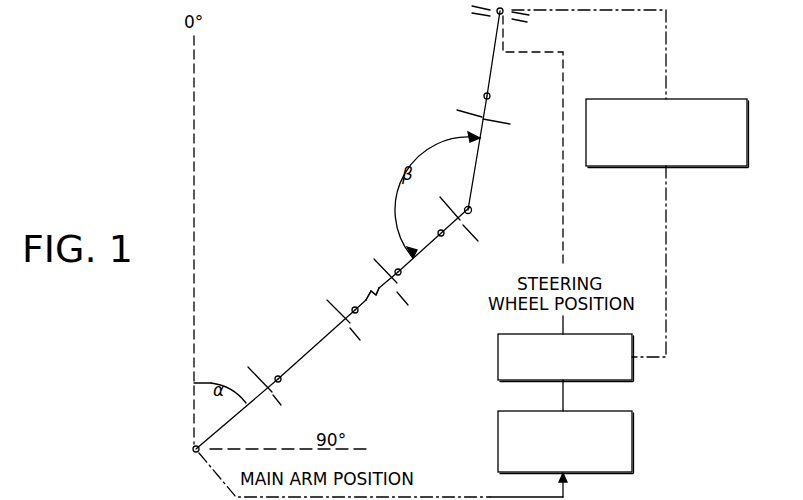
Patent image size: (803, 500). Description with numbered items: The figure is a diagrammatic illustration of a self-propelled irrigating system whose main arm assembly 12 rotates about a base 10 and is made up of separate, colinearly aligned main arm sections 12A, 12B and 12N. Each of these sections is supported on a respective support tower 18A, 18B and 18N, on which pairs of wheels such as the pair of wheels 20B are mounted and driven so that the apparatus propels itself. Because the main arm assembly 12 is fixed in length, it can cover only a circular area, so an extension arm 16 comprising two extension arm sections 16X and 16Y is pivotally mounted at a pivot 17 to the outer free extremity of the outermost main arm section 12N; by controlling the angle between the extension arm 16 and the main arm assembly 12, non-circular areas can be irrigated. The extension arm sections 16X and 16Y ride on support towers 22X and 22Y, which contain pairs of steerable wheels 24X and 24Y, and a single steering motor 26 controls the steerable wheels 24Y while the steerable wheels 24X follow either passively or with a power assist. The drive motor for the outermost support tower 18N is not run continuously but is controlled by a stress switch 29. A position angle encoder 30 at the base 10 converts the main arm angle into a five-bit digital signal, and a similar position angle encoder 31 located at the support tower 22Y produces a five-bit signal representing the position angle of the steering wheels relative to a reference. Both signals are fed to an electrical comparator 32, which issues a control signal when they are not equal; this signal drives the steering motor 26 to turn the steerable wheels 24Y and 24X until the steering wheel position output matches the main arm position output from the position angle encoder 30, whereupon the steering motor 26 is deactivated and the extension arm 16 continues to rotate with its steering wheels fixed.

The base 10 is at (193, 450).
The main arm assembly 12 is at (333, 328).
The main arm section 12A is at (222, 426).
The main arm section 12B is at (295, 365).
The main arm section 12N is at (424, 246).
The extension arm 16 is at (472, 110).
The extension arm section 16X is at (477, 160).
The extension arm section 16Y is at (491, 68).
The pivot 17 is at (472, 211).
The support tower 18A is at (266, 372).
The support tower 18B is at (340, 303).
The support tower 18N is at (476, 237).
The pair of wheels 20B is at (325, 303).
The support tower 22X is at (480, 106).
The support tower 22Y is at (520, 13).
The steerable wheels 24X is at (465, 113).
The steerable wheels 24Y is at (517, 21).
The steering motor 26 is at (495, 15).
The stress switch 29 is at (396, 222).
The position angle encoder 30 is at (633, 430).
The position angle encoder 31 is at (700, 99).
The electrical comparator 32 is at (497, 356).